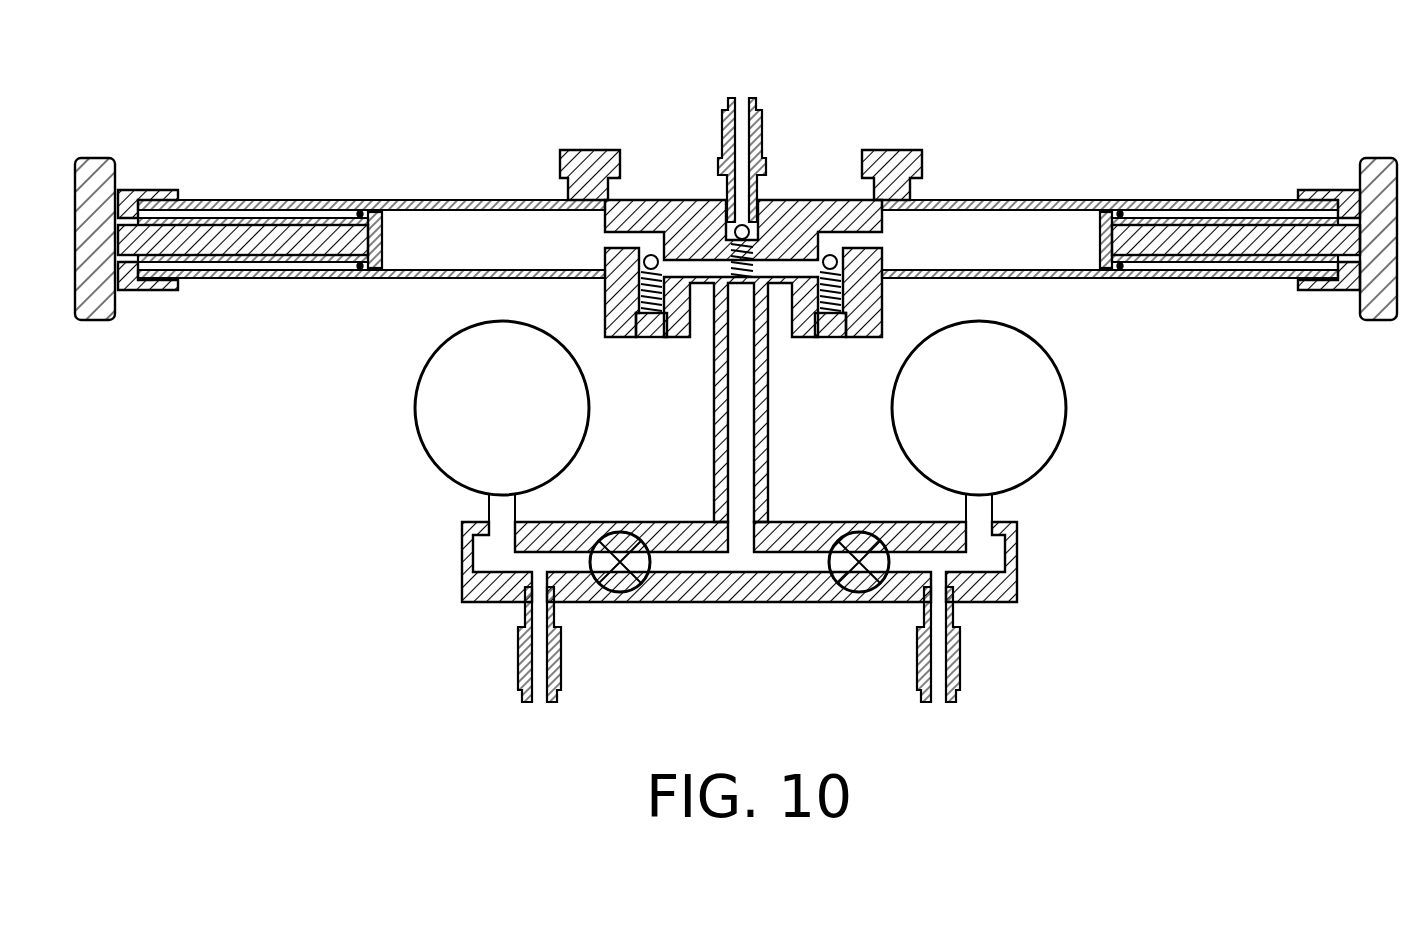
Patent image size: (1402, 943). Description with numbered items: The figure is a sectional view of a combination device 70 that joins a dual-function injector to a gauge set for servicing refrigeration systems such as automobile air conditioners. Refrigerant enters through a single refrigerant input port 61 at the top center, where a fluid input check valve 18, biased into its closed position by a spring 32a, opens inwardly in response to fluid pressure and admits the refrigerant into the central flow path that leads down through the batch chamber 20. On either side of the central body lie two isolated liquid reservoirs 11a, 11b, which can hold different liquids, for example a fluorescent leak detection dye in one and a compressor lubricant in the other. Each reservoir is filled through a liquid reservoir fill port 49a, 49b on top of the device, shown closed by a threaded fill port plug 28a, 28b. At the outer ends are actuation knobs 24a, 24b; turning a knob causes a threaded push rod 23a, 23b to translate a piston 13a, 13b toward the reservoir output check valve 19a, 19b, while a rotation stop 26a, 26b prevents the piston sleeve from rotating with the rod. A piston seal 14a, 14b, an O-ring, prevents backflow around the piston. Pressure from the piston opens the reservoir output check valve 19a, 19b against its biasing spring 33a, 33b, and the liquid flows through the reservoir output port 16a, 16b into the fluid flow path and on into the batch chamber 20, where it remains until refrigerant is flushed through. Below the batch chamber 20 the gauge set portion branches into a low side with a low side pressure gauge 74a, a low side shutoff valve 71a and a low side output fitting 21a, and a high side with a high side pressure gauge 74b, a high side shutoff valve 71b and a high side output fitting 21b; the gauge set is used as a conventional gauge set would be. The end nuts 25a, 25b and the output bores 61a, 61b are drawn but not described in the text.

The combination device 70 is at (736, 378).
The refrigerant input port 61 is at (745, 100).
The threaded fill port plug 28a is at (592, 150).
The threaded fill port plug 28b is at (893, 150).
The liquid reservoir 11a is at (455, 200).
The liquid reservoir 11b is at (1025, 200).
The reservoir output check valve 19a is at (649, 255).
The reservoir output check valve 19b is at (834, 255).
The piston 13a is at (385, 205).
The piston 13b is at (1093, 205).
The spring 32a is at (735, 248).
The fluid input check valve 18 is at (752, 232).
The end nut 25a is at (133, 192).
The end nut 25b is at (1343, 192).
The threaded push rod 23a is at (318, 235).
The threaded push rod 23b is at (1160, 235).
The liquid reservoir fill port 49a is at (591, 210).
The liquid reservoir fill port 49b is at (892, 210).
The actuation knob 24a is at (105, 318).
The actuation knob 24b is at (1378, 318).
The rotation stop 26a is at (358, 268).
The rotation stop 26b is at (1120, 268).
The piston seal 14a is at (378, 272).
The piston seal 14b is at (1102, 272).
The reservoir output port 16a is at (605, 243).
The reservoir output port 16b is at (880, 243).
The spring 33a is at (640, 305).
The spring 33b is at (843, 305).
The batch chamber 20 is at (766, 440).
The low side pressure gauge 74a is at (443, 477).
The high side pressure gauge 74b is at (1038, 477).
The low side shutoff valve 71a is at (652, 562).
The high side shutoff valve 71b is at (827, 562).
The low side output fitting 21a is at (520, 665).
The high side output fitting 21b is at (958, 665).
The port bore 61a is at (538, 704).
The port bore 61b is at (938, 704).